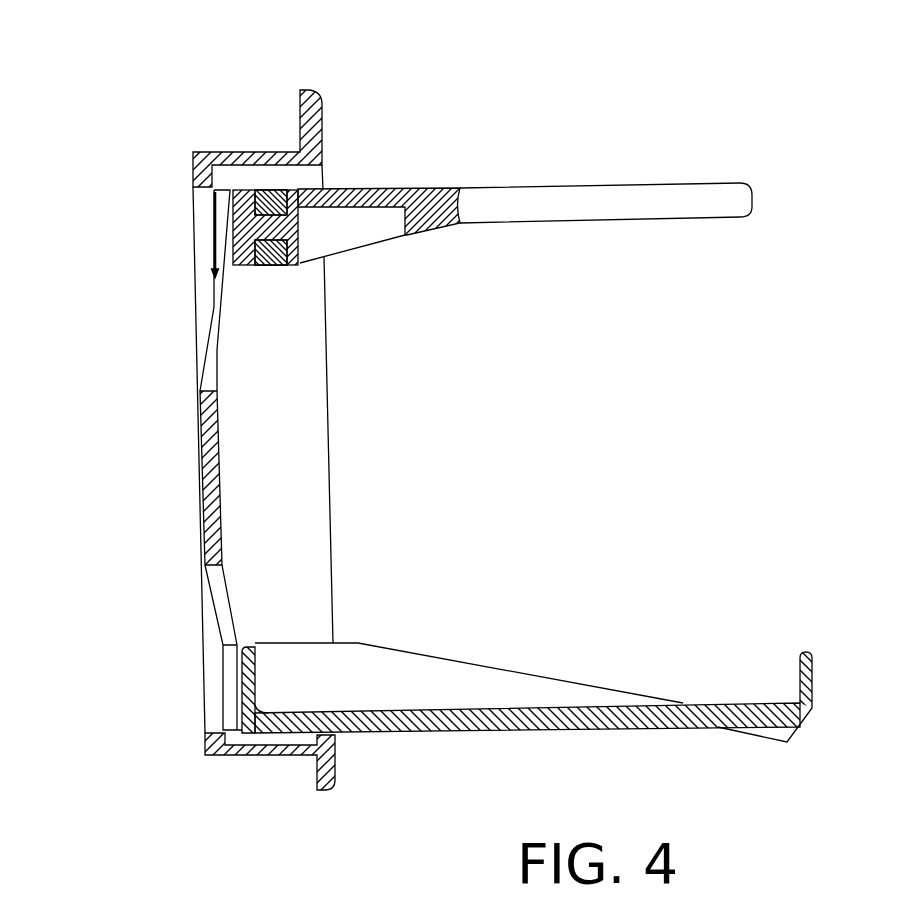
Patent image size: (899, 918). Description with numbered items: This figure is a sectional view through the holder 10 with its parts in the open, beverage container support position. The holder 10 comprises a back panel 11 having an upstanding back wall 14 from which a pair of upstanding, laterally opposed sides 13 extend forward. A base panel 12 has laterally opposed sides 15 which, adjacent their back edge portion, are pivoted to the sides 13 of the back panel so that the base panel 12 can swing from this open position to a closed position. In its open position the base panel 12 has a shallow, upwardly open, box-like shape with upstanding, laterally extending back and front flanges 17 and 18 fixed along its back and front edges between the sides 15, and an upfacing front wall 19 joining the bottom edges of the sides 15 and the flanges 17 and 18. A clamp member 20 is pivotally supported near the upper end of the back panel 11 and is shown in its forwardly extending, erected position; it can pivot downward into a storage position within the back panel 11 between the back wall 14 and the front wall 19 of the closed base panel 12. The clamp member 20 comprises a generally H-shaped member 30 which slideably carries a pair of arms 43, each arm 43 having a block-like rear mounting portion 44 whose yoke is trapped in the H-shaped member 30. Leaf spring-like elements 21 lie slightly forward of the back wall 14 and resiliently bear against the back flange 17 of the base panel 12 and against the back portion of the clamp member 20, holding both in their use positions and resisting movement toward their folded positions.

The holder 10 is at (184, 112).
The back panel 11 is at (245, 143).
The base panel 12 is at (818, 664).
The sides 13 is at (308, 423).
The back wall 14 is at (202, 460).
The sides 15 is at (398, 667).
The back flange 17 is at (247, 688).
The front flange 18 is at (813, 692).
The front wall 19 is at (428, 733).
The clamp member 20 is at (500, 178).
The leaf spring-like elements 21 is at (218, 213).
The H-shaped member 30 is at (277, 278).
The arms 43 is at (618, 190).
The rear mounting portion 44 is at (380, 188).